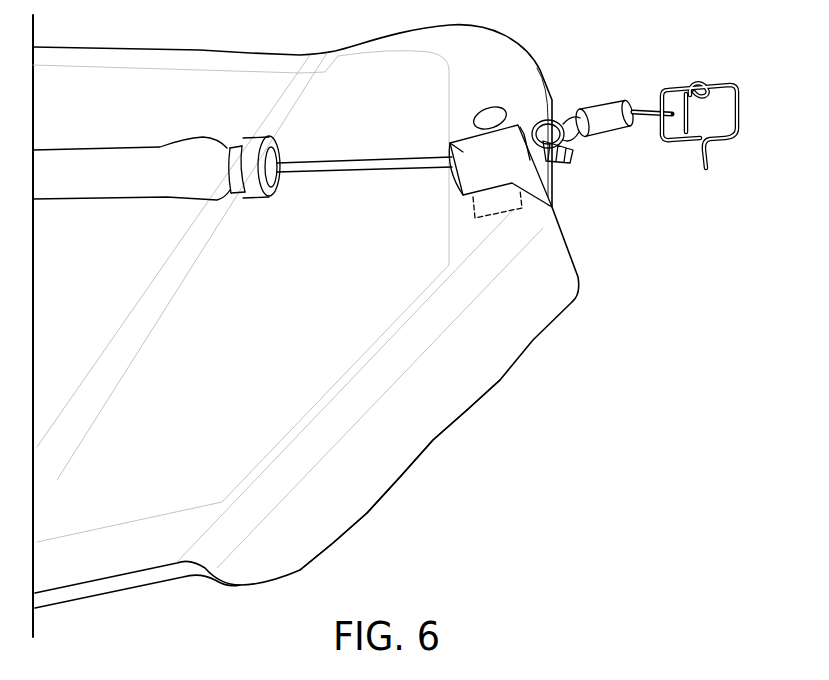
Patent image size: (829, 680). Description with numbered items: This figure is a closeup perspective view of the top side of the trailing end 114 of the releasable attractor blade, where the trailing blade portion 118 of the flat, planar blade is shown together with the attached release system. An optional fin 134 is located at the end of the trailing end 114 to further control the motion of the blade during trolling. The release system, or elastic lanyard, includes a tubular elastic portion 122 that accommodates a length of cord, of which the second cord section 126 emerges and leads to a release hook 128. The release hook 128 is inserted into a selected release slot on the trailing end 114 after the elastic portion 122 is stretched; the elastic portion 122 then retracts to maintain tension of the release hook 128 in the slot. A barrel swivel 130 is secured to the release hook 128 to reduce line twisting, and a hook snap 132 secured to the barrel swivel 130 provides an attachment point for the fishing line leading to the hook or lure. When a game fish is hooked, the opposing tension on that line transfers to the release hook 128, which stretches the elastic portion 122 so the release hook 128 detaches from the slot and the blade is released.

The trailing end 114 is at (592, 334).
The trailing blade portion 118 is at (368, 85).
The elastic portion 122 is at (118, 182).
The second cord section 126 is at (337, 172).
The release hook 128 is at (458, 146).
The barrel swivel 130 is at (603, 106).
The hook snap 132 is at (736, 90).
The fin 134 is at (463, 393).